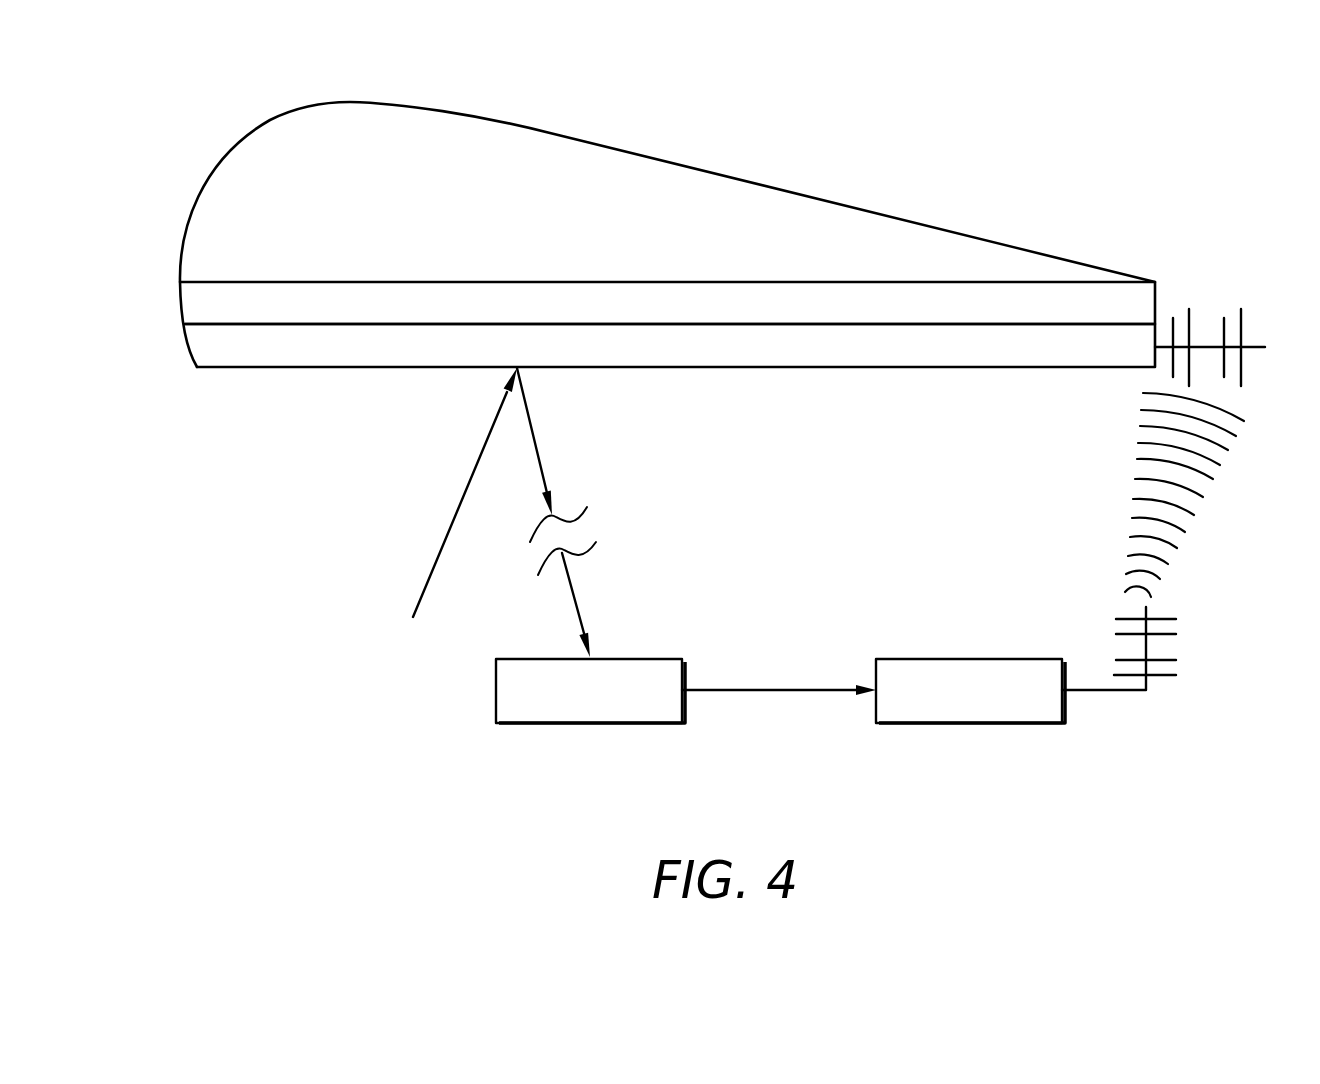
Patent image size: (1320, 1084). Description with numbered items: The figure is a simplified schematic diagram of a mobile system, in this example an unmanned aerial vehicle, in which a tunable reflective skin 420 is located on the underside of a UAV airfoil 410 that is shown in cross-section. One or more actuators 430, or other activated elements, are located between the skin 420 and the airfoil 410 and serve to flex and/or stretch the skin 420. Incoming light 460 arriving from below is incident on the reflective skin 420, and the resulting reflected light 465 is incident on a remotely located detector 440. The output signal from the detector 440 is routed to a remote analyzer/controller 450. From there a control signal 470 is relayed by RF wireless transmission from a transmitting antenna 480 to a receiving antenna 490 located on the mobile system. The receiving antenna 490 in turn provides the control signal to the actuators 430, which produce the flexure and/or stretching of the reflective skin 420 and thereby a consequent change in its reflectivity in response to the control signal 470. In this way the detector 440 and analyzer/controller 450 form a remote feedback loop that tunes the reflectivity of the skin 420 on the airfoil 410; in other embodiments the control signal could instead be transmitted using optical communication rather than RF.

The UAV airfoil 410 is at (218, 172).
The tunable reflective skin 420 is at (190, 350).
The actuators 430 is at (815, 303).
The detector 440 is at (637, 658).
The analyzer/controller 450 is at (970, 658).
The incoming light 460 is at (447, 533).
The reflected light 465 is at (535, 438).
The control signal 470 is at (1148, 497).
The transmitting antenna 480 is at (1169, 660).
The receiving antenna 490 is at (1202, 299).